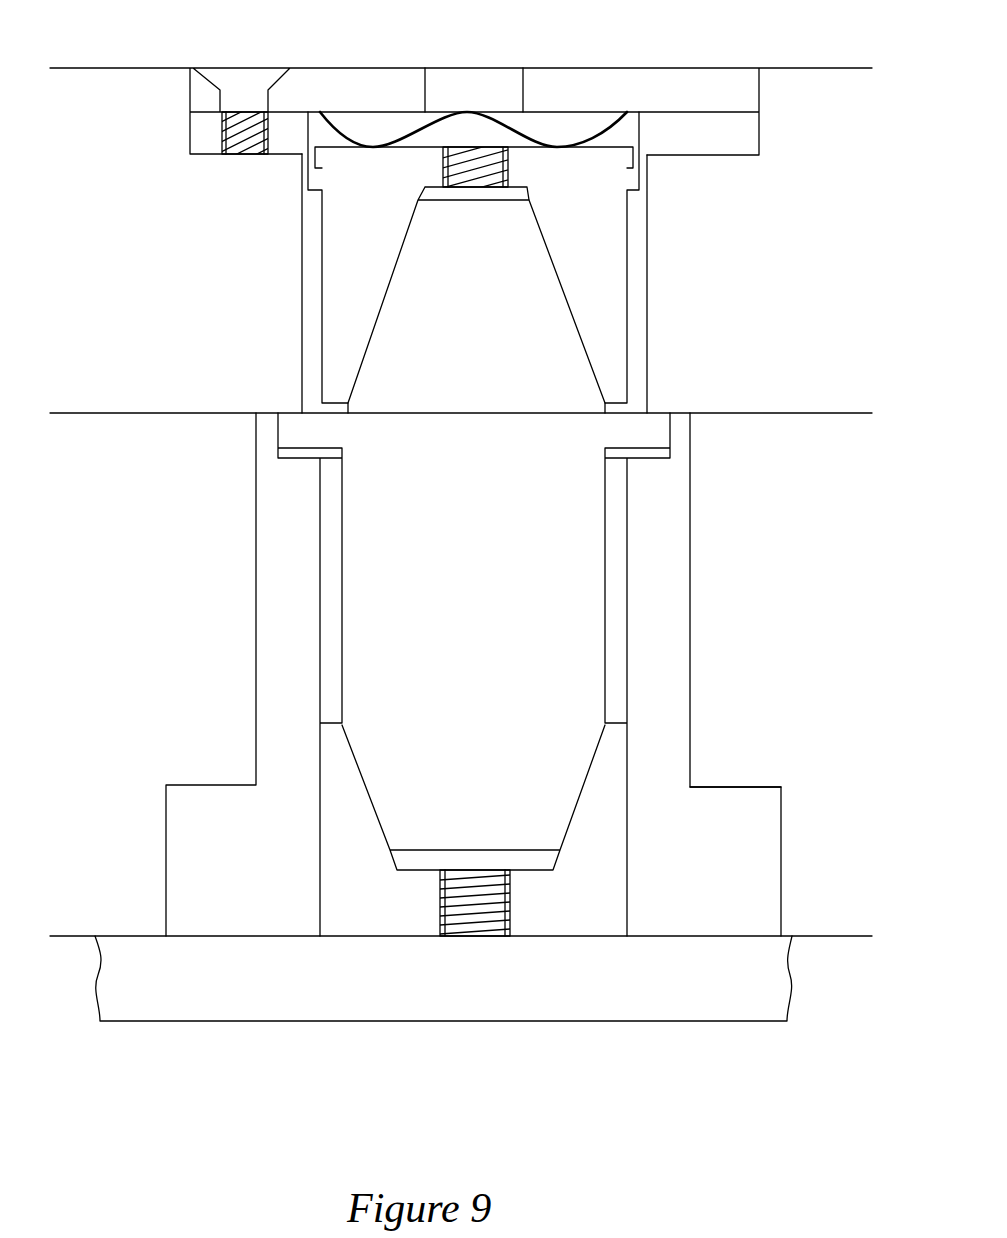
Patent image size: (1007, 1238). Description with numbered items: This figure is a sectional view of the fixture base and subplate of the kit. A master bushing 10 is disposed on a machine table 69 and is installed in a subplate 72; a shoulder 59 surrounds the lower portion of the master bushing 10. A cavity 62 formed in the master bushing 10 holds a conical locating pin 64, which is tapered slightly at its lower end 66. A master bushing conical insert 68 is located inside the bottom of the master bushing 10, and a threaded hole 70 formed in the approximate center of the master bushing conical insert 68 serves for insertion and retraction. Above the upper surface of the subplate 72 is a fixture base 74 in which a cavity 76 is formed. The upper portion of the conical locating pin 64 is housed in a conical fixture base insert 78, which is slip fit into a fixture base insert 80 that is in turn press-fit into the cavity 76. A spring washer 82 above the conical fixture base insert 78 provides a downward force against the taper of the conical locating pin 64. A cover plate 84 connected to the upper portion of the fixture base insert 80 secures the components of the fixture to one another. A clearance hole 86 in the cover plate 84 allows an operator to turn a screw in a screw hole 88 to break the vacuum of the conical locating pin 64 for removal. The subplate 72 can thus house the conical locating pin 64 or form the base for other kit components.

The master bushing 10 is at (690, 640).
The shoulder 59 is at (753, 787).
The cavity 62 is at (322, 693).
The conical locating pin 64 is at (577, 560).
The lower end 66 is at (580, 805).
The master bushing conical insert 68 is at (597, 905).
The machine table 69 is at (715, 993).
The threaded hole 70 is at (438, 903).
The subplate 72 is at (128, 576).
The fixture base 74 is at (133, 314).
The cavity 76 is at (302, 262).
The conical fixture base insert 78 is at (605, 305).
The fixture base insert 80 is at (190, 138).
The spring washer 82 is at (342, 132).
The cover plate 84 is at (582, 68).
The clearance hole 86 is at (465, 68).
The screw hole 88 is at (510, 163).